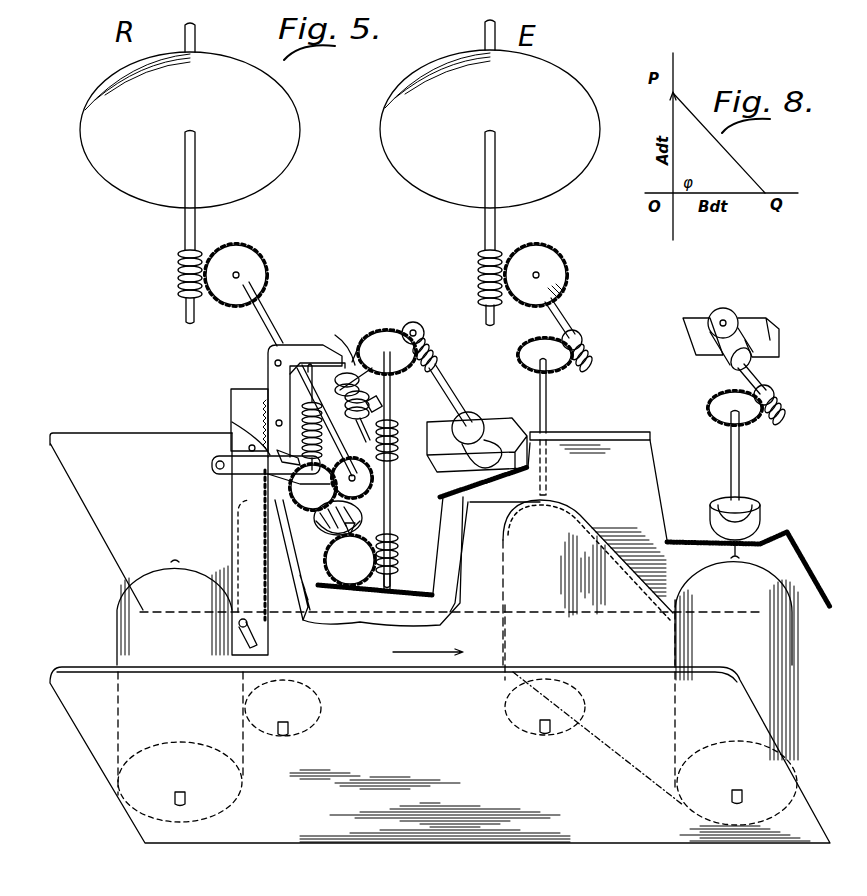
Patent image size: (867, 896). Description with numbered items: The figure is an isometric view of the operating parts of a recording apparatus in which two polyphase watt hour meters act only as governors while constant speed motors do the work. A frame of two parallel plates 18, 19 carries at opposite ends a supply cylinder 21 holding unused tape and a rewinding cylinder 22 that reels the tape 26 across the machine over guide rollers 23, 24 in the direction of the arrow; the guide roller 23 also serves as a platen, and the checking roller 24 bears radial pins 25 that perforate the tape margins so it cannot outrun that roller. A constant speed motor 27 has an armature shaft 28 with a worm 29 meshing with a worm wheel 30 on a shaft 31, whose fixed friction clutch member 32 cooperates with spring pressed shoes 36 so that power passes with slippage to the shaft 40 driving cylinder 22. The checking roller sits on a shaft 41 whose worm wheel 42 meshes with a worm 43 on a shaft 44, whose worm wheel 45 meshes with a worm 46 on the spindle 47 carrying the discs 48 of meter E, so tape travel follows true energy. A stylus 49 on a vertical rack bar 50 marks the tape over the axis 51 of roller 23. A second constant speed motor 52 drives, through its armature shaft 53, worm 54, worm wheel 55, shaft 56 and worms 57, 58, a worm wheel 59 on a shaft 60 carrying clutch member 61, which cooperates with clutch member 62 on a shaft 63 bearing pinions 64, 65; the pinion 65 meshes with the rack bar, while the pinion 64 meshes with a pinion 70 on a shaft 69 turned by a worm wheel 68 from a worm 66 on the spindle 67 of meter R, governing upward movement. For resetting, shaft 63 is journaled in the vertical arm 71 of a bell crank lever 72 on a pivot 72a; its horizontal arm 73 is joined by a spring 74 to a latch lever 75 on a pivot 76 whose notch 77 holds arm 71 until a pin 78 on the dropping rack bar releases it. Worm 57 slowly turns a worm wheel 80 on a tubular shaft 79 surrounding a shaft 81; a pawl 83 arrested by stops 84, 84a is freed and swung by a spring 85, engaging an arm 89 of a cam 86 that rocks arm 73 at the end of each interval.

The plate 18 is at (105, 505).
The plate 19 is at (68, 688).
The cylinder 21 is at (118, 648).
The rewinding cylinder 22 is at (795, 768).
The guide roller 23 is at (315, 722).
The guide roller 24 is at (512, 727).
The radial pins 25 is at (562, 589).
The tape 26 is at (485, 472).
The constant speed electric motor 27 is at (730, 360).
The armature shaft 28 is at (765, 378).
The worm 29 is at (784, 405).
The worm wheel 30 is at (752, 428).
The shaft 31 is at (742, 484).
The friction clutch member 32 is at (762, 530).
The shoes 36 is at (710, 540).
The shaft 40 is at (730, 802).
The shaft 41 is at (548, 406).
The worm wheel 42 is at (532, 368).
The worm 43 is at (584, 338).
The shaft 44 is at (566, 318).
The worm wheel 45 is at (555, 252).
The worm 46 is at (478, 282).
The spindle 47 is at (496, 228).
The discs 48 is at (570, 188).
The stylus 49 is at (252, 640).
The rack bar 50 is at (246, 552).
The axis 51 is at (280, 737).
The constant speed motor 52 is at (470, 422).
The armature shaft 53 is at (454, 388).
The worm 54 is at (425, 333).
The worm wheel 55 is at (387, 344).
The shaft 56 is at (396, 422).
The worm 57 is at (398, 458).
The worm 58 is at (392, 578).
The worm wheel 59 is at (398, 538).
The shaft 60 is at (350, 554).
The clutch member 61 is at (362, 518).
The clutch member 62 is at (302, 572).
The shaft 63 is at (360, 492).
The pinion 64 is at (312, 500).
The pinion 65 is at (298, 410).
The worm 66 is at (185, 312).
The spindle 67 is at (186, 228).
The worm wheel 68 is at (263, 262).
The shaft 69 is at (272, 318).
The pinion 70 is at (392, 478).
The vertical arm 71 is at (258, 400).
The bell crank lever 72 is at (270, 350).
The pivot 72a is at (280, 360).
The horizontal arm 73 is at (322, 358).
The spring 74 is at (268, 478).
The latch lever 75 is at (260, 470).
The pivot 76 is at (216, 468).
The notch 77 is at (234, 422).
The pin 78 is at (278, 452).
The shaft 79 is at (376, 410).
The worm wheel 80 is at (398, 442).
The shaft 81 is at (361, 339).
The pawl 83 is at (372, 400).
The stop 84 is at (380, 402).
The stop 84a is at (342, 339).
The spring 85 is at (352, 445).
The cam 86 is at (347, 380).
The arm 89 is at (362, 395).